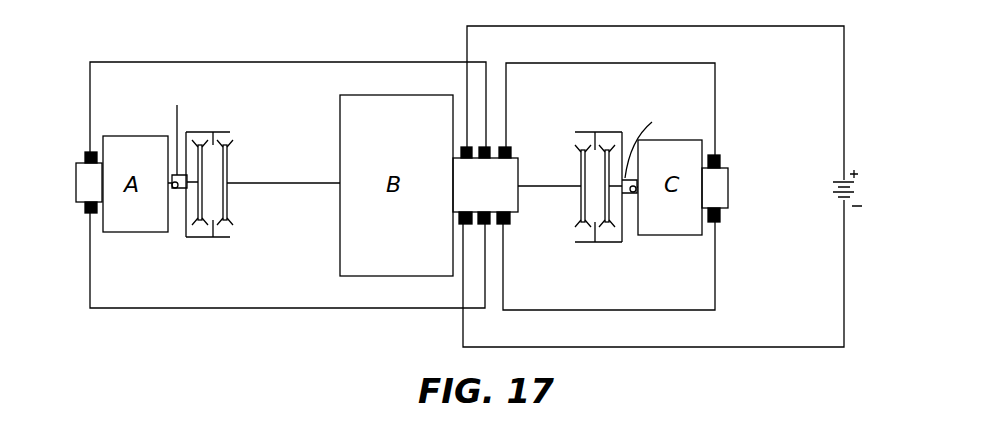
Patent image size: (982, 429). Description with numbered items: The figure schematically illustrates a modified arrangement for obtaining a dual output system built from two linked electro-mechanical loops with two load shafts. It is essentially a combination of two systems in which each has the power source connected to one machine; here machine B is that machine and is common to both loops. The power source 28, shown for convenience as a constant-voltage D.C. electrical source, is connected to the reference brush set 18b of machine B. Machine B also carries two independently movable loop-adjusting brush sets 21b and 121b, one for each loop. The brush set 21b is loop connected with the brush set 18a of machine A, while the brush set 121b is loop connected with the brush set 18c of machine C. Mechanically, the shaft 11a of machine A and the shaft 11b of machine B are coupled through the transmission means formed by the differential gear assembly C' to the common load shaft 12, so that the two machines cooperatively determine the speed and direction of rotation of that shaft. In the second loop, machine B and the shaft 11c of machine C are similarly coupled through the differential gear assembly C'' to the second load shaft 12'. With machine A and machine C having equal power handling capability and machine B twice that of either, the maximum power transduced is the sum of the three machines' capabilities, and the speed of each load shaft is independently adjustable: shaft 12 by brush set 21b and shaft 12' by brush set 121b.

The brush set of machine A 18a is at (84, 154).
The load shaft 12 is at (177, 128).
The shaft of machine A 11a is at (197, 184).
The differential gear assembly C' is at (216, 158).
The shaft of machine B 11b is at (262, 182).
The reference brush set of machine B 18b is at (460, 152).
The loop-adjusting brush set 21b is at (487, 147).
The loop-adjusting brush set 121b is at (508, 148).
The differential gear assembly C'' is at (606, 158).
The load shaft 12' is at (655, 141).
The shaft of machine C 11c is at (614, 193).
The brush set of machine C 18c is at (721, 158).
The power source 28 is at (861, 183).